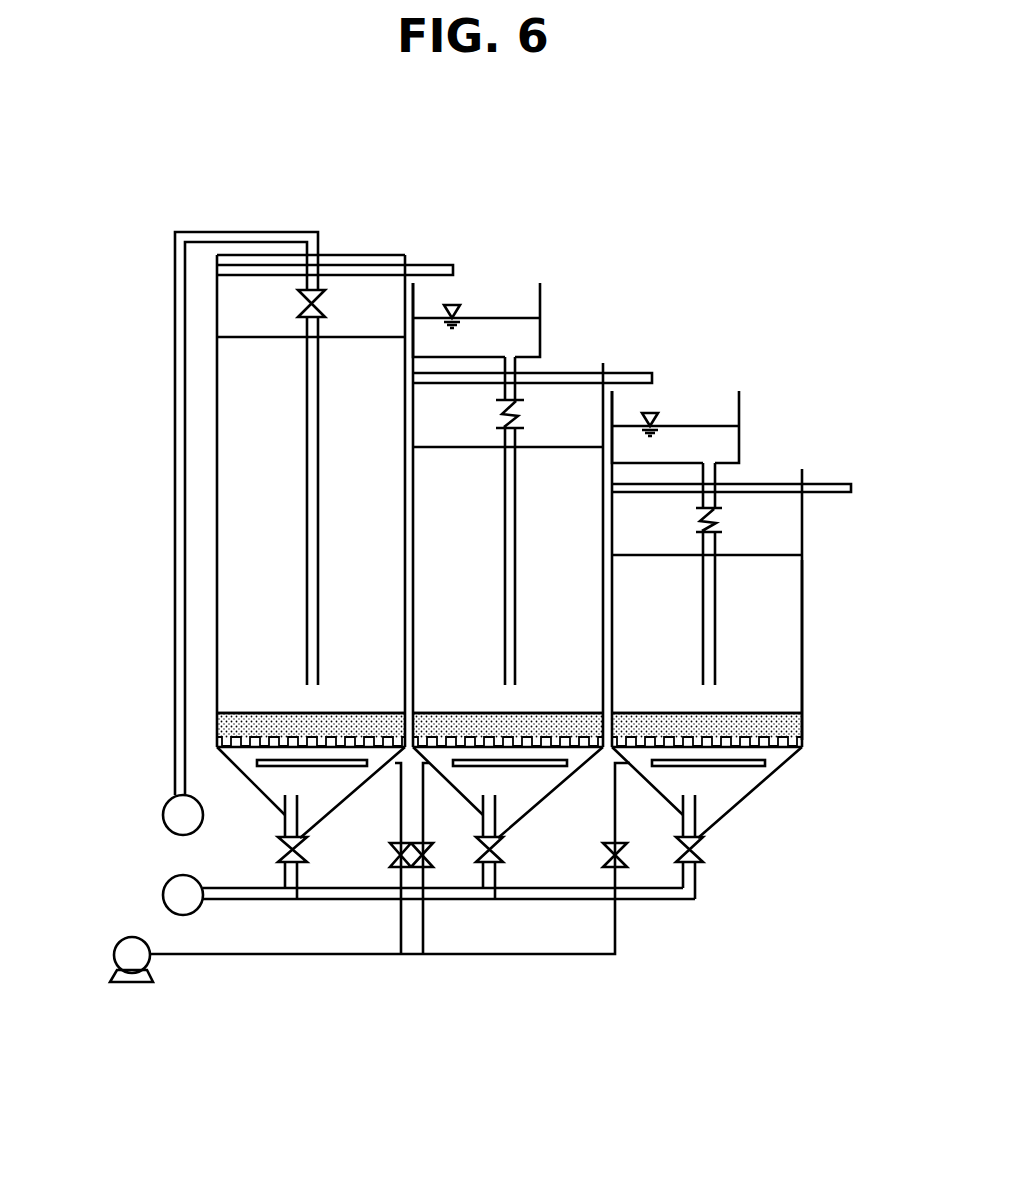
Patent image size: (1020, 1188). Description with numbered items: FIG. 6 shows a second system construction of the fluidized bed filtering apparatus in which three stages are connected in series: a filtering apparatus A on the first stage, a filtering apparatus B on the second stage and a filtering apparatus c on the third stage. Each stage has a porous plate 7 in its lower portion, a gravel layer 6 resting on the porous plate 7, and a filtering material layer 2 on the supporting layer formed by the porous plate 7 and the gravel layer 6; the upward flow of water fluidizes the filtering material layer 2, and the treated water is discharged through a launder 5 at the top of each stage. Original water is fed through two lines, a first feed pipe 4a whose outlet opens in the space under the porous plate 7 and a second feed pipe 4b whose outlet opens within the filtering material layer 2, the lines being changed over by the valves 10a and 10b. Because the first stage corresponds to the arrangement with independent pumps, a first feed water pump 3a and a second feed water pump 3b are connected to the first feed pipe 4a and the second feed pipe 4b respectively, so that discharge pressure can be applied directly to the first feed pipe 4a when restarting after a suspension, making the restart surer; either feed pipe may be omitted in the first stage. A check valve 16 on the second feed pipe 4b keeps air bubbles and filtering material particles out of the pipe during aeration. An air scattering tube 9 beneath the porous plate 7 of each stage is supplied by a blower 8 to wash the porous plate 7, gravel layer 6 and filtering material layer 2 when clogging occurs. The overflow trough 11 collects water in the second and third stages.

The filtering apparatus on the first stage A is at (204, 312).
The filtering apparatus on the second stage B is at (610, 366).
The filtering apparatus on the third stage c is at (804, 579).
The filtering material layer 2 is at (789, 639).
The first feed water pump 3a is at (162, 893).
The second feed water pump 3b is at (162, 813).
The first feed pipe 4a is at (285, 818).
The second feed pipe 4b is at (238, 232).
The launder 5 is at (486, 298).
The gravel layer 6 is at (797, 733).
The porous plate 7 is at (787, 750).
The blower 8 is at (113, 955).
The air scattering tube 9 is at (327, 768).
The valve 10a is at (303, 855).
The valve 10b is at (318, 296).
The overflow trough 11 is at (541, 285).
The check valve 16 is at (523, 412).